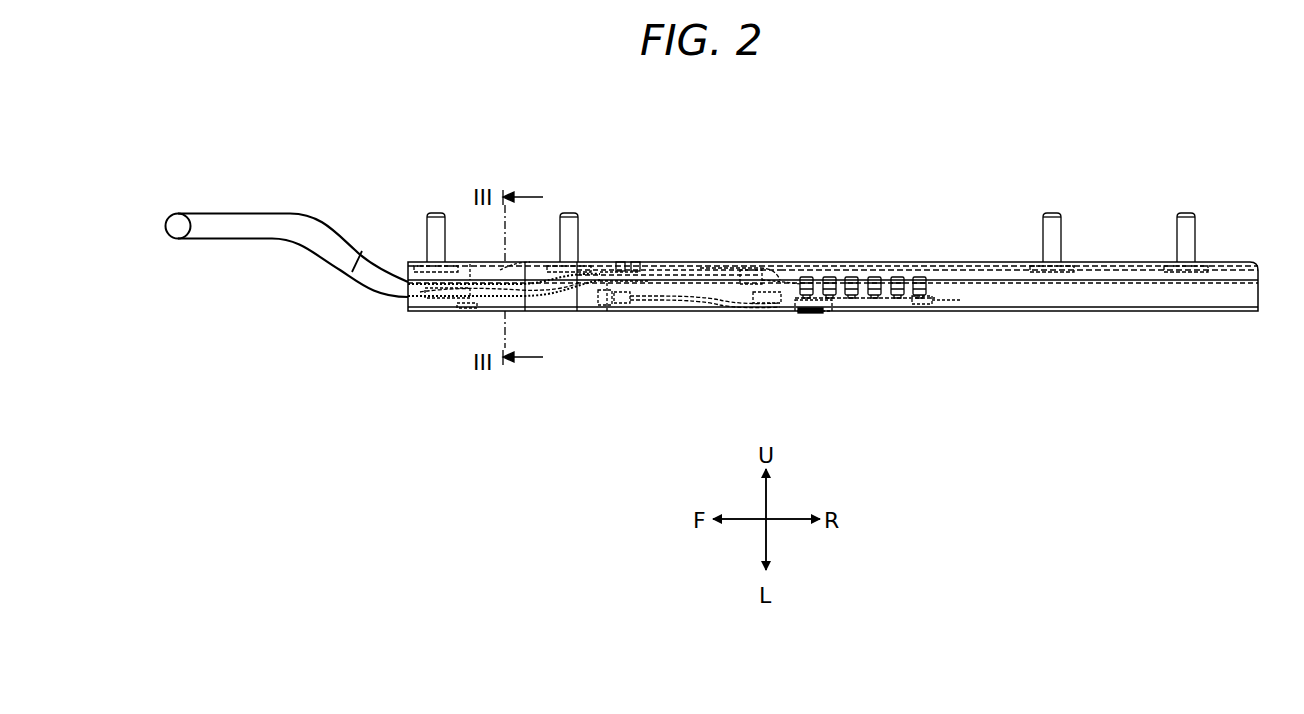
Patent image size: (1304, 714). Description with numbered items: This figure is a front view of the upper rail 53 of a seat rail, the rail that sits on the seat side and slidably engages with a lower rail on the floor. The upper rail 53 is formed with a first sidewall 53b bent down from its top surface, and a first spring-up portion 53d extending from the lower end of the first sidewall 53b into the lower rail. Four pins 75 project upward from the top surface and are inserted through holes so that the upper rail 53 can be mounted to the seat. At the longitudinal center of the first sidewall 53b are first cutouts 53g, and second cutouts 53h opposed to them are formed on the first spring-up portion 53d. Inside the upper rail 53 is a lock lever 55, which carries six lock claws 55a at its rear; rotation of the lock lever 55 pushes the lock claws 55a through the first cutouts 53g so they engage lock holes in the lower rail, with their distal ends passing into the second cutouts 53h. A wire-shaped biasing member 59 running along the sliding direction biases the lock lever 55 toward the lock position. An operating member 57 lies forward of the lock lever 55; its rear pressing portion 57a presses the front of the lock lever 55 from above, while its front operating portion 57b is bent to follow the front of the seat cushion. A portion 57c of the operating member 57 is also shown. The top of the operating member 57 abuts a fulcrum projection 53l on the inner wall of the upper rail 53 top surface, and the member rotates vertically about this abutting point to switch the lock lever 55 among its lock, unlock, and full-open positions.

The upper rail 53 is at (1028, 170).
The first sidewall 53b is at (835, 272).
The first spring-up portion 53d is at (1143, 297).
The first cutouts 53g is at (898, 278).
The second cutouts 53h is at (917, 304).
The fulcrum projection 53l is at (515, 270).
The lock lever 55 is at (712, 313).
The lock claws 55a is at (930, 302).
The operating member 57 is at (238, 242).
The pressing portion 57a is at (578, 313).
The operating portion 57b is at (205, 212).
The cable fixing portion 57c is at (418, 313).
The biasing member 59 is at (722, 262).
The pins 75 is at (428, 232).